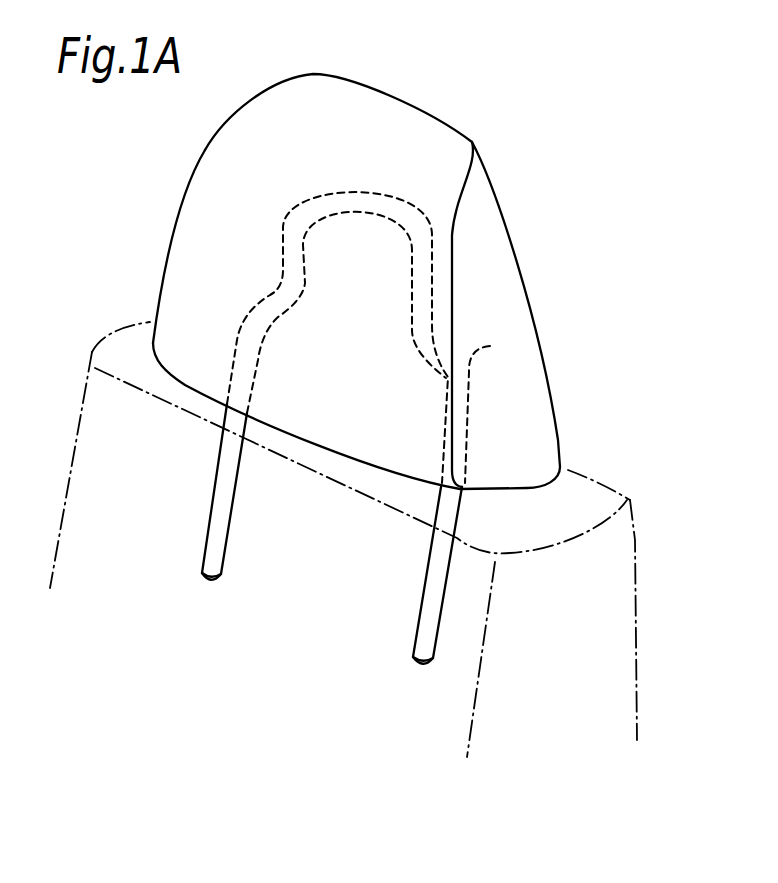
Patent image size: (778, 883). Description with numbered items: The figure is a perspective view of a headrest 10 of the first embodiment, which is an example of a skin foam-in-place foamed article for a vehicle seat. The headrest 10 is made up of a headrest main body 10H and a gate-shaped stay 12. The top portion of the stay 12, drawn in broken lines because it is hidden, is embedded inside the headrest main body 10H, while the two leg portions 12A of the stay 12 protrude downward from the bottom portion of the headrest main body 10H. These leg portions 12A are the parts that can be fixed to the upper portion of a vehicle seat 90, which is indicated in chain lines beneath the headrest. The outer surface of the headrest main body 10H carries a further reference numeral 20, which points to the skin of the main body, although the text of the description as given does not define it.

The headrest 10 is at (346, 369).
The headrest main body 10H is at (196, 221).
The stay 12 is at (490, 346).
The leg portion 12A is at (220, 565).
The pad / skin of headrest 20 is at (523, 262).
The vehicle seat 90 is at (570, 470).